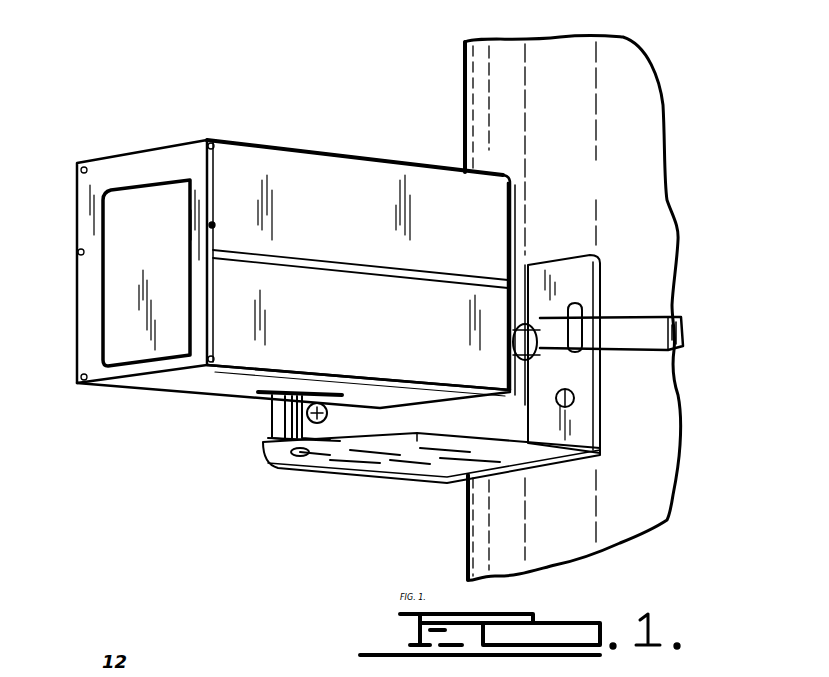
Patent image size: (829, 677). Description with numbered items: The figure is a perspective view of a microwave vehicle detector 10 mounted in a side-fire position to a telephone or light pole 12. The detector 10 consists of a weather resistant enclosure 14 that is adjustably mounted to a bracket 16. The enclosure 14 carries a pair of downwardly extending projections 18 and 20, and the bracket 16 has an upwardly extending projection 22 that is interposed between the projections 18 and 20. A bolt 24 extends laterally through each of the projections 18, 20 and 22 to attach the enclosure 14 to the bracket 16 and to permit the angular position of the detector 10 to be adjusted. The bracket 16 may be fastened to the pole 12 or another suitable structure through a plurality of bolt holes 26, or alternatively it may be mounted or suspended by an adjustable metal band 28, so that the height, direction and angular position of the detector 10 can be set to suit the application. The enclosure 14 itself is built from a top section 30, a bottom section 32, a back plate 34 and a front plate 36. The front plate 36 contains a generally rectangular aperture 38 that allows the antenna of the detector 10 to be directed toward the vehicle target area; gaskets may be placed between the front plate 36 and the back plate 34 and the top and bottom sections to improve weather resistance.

The microwave vehicle detector 10 is at (218, 70).
The telephone or light pole 12 is at (665, 202).
The weather resistant enclosure 14 is at (301, 261).
The bracket 16 is at (372, 478).
The downwardly extending projection 18 is at (268, 412).
The downwardly extending projection 20 is at (303, 400).
The upwardly extending projection 22 is at (289, 446).
The bolt 24 is at (322, 402).
The bolt holes 26 is at (575, 400).
The adjustable metal band 28 is at (684, 333).
The top section 30 is at (243, 170).
The bottom section 32 is at (185, 394).
The back plate 34 is at (512, 196).
The front plate 36 is at (82, 290).
The rectangular aperture 38 is at (118, 338).